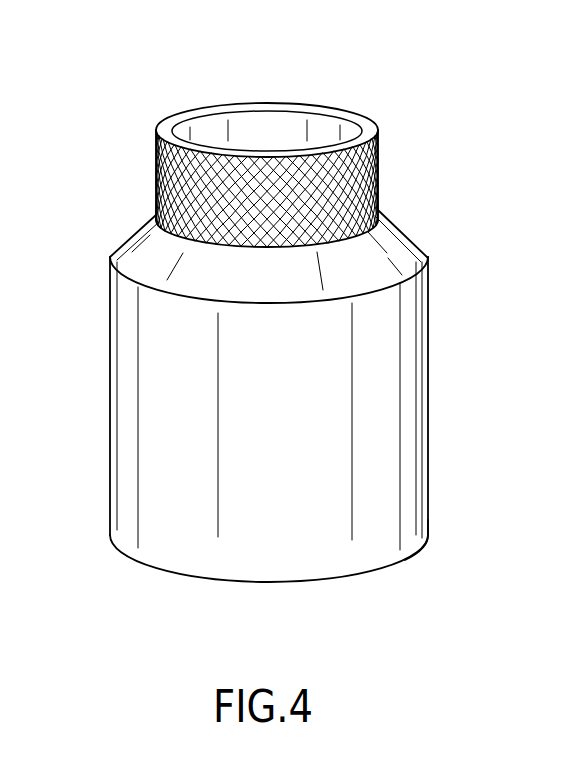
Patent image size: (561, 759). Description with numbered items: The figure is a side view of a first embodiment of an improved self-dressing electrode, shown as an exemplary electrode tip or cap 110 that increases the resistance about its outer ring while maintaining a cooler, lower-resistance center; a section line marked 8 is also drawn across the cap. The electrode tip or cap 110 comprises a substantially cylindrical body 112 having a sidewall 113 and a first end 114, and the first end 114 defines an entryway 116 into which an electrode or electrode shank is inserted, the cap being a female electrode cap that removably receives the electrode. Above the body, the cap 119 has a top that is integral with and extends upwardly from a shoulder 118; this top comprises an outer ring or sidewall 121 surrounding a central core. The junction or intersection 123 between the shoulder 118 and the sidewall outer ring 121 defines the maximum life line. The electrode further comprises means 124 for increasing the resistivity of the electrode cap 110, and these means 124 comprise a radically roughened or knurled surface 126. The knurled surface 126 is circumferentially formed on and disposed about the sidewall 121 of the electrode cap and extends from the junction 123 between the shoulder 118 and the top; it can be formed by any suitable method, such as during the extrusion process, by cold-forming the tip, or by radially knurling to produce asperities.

The section line 8- 8 is at (271, 100).
The electrode tip or cap 110 is at (265, 347).
The cylindrical body 112 is at (92, 443).
The sidewall 113 is at (414, 345).
The first end 114 is at (406, 553).
The entryway 116 is at (351, 574).
The shoulder 118 is at (404, 233).
The cap 119 is at (365, 121).
The outer ring or sidewall 121 is at (379, 181).
The junction or intersection 123 is at (153, 212).
The means for increasing the resistivity 124 is at (268, 162).
The knurled surface 126 is at (386, 148).